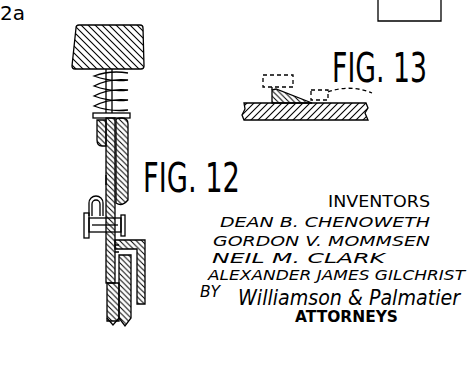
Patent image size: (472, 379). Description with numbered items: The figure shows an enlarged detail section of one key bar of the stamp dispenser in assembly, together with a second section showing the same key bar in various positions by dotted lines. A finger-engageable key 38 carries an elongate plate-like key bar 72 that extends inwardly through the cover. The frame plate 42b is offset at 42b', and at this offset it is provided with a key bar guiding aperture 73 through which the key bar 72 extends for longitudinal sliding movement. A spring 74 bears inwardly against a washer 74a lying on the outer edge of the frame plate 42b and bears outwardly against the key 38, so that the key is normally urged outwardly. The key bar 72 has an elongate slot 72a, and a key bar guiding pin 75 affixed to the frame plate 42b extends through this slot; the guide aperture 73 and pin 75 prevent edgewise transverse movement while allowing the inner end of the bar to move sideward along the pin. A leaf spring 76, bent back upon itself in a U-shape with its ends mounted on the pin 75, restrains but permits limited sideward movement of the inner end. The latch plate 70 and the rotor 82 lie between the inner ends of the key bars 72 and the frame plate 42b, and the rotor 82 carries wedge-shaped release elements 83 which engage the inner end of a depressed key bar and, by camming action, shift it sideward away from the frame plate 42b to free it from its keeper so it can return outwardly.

In FIG. 12, the key 38 is at (133, 46).
In FIG. 12, the upright mounting plate 42b is at (148, 260).
In FIG. 12, the offset of frame plate 42b' is at (150, 151).
In FIG. 12, the latch plate 70 is at (128, 318).
In FIG. 12, the key bar 72 is at (108, 157).
In FIG. 13, the key bar 72 is at (289, 73).
In FIG. 12, the elongate slot 72a is at (107, 181).
In FIG. 12, the key bar guiding aperture 73 is at (97, 147).
In FIG. 12, the spring 74 is at (97, 80).
In FIG. 12, the washer 74a is at (95, 115).
In FIG. 12, the key bar guiding pin 75 is at (98, 236).
In FIG. 12, the leaf spring 76 is at (89, 201).
In FIG. 12, the rotor 82 is at (115, 318).
In FIG. 13, the rotor 82 is at (334, 118).
In FIG. 12, the camming release element 83 is at (112, 302).
In FIG. 13, the camming release element 83 is at (273, 98).